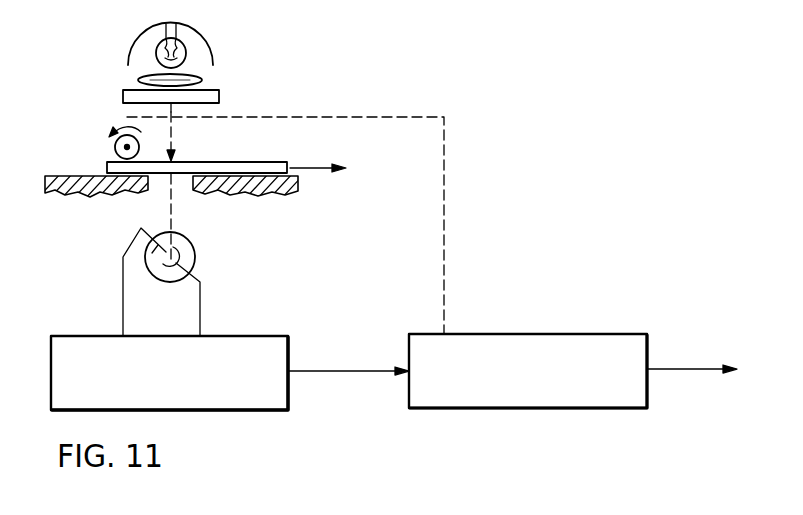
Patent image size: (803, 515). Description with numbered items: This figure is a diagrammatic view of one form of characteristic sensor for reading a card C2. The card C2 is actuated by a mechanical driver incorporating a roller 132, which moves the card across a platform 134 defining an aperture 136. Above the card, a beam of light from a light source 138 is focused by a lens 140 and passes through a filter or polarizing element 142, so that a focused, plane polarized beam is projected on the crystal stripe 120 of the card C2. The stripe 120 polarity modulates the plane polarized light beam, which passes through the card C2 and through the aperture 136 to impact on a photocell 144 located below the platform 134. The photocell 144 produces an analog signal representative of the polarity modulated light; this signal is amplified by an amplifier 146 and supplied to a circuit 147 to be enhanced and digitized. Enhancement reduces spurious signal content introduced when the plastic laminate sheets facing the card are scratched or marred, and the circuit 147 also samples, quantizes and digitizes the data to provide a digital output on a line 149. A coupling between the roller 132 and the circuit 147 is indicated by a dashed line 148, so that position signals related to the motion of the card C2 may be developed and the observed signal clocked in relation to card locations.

The crystal stripe 120 is at (195, 162).
The roller 132 is at (115, 146).
The platform 134 is at (97, 191).
The aperture 136 is at (192, 185).
The light source 138 is at (205, 44).
The lens 140 is at (201, 80).
The filter or polarizing element 142 is at (220, 98).
The photocell 144 is at (196, 255).
The amplifier 146 is at (272, 335).
The circuit 147 is at (556, 334).
The dashed line 148 is at (446, 213).
The line 149 is at (666, 369).
The card C2 is at (251, 162).